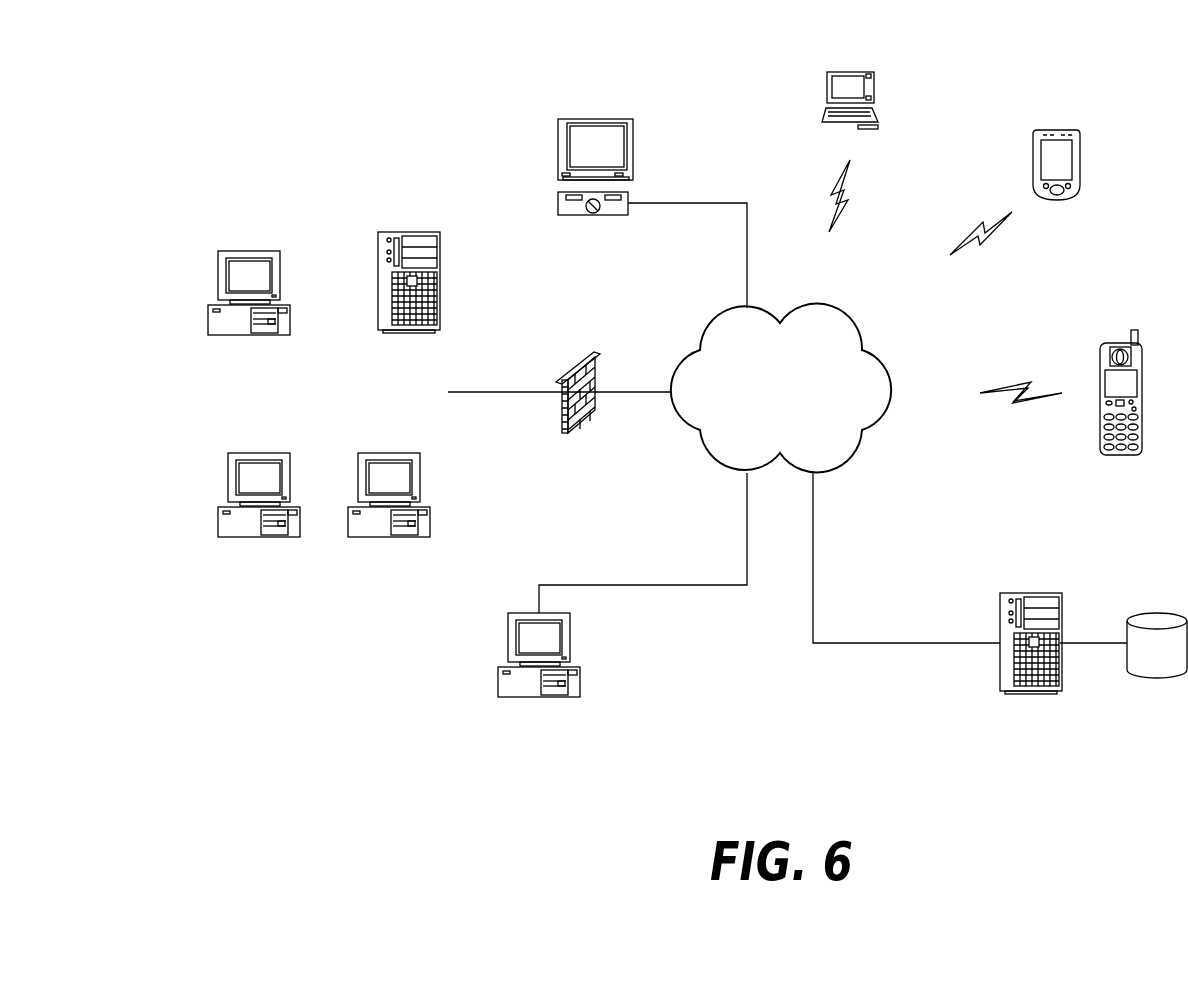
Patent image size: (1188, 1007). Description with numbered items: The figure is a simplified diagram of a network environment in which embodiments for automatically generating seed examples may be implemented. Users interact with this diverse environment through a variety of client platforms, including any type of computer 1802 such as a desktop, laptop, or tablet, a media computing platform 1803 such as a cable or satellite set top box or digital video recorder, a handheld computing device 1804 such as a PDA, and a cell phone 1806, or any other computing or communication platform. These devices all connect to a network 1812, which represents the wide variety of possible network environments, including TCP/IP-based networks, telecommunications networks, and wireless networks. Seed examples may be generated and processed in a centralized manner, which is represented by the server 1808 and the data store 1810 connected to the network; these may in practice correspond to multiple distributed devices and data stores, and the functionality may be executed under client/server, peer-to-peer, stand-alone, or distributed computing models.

The computer 1802 is at (826, 72).
The media computing platform 1803 is at (557, 203).
The handheld computing device 1804 is at (1040, 128).
The cell phone 1806 is at (1103, 350).
The server 1808 is at (1000, 594).
The data store 1810 is at (1155, 612).
The network 1812 is at (716, 322).